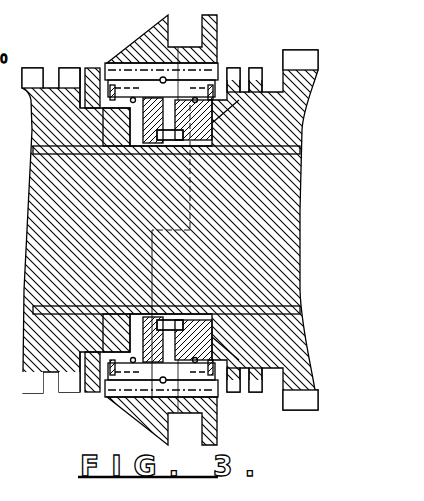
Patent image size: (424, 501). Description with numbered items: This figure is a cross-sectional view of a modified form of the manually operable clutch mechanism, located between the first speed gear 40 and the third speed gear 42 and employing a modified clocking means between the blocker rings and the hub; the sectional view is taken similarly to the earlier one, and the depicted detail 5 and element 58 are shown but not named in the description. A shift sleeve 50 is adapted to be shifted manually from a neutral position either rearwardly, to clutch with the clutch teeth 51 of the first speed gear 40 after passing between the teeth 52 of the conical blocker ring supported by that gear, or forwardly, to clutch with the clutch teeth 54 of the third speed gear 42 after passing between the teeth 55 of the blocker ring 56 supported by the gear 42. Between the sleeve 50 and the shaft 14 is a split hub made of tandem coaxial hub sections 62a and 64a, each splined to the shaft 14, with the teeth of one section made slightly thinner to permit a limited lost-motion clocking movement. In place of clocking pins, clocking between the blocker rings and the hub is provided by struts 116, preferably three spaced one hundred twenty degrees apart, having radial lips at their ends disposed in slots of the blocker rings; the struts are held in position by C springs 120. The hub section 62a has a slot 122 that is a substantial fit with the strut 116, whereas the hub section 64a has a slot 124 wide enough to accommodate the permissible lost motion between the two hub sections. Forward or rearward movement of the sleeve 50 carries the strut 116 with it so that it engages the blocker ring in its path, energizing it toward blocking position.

The shaft 14 is at (302, 213).
The first speed gear 40 is at (302, 52).
The third speed gear 42 is at (30, 70).
The clutch teeth 54 is at (70, 57).
The key block 58 is at (92, 68).
The blocker ring 56 is at (83, 105).
The C springs 120 is at (110, 113).
The wedge cam 5 is at (113, 432).
The shift sleeve 50 is at (215, 63).
The struts 116 is at (232, 70).
The teeth 52 is at (234, 67).
The clutch teeth 51 is at (252, 67).
The teeth 55 is at (232, 108).
The hub section 64a is at (234, 138).
The slot 124 is at (180, 127).
The slot 122 is at (115, 158).
The hub section 62a is at (158, 155).